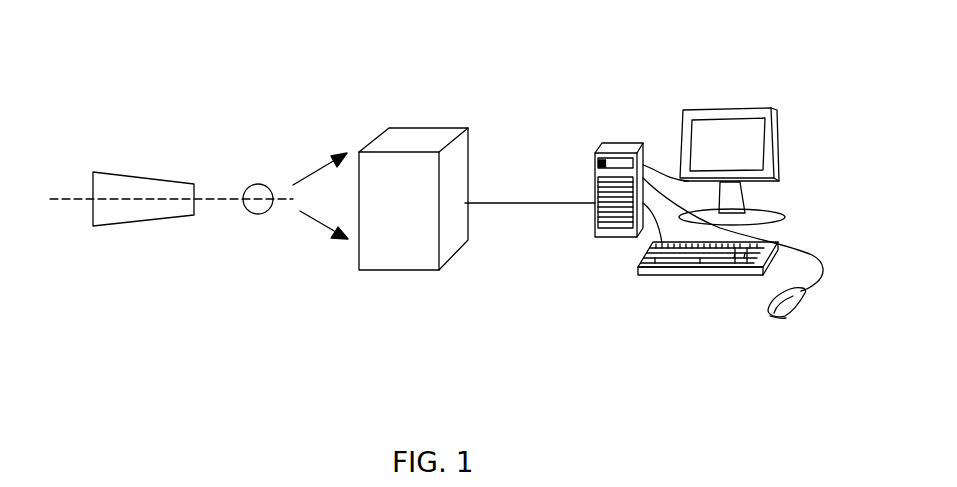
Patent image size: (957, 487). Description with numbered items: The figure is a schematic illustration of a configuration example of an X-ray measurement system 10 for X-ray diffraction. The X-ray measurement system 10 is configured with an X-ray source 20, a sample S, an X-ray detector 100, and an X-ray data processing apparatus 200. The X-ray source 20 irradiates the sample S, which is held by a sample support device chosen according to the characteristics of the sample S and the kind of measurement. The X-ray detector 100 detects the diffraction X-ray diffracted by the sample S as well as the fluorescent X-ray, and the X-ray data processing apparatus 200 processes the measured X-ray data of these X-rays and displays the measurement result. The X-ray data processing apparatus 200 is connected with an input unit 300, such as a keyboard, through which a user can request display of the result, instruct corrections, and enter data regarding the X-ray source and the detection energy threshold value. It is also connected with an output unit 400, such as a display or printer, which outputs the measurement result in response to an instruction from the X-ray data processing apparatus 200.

The X-ray measurement system 10 is at (453, 66).
The X-ray source 20 is at (146, 221).
The sample S is at (259, 214).
The X-ray detector 100 is at (470, 175).
The X-ray data processing apparatus 200 is at (618, 143).
The input unit 300 is at (640, 269).
The output unit 400 is at (777, 142).